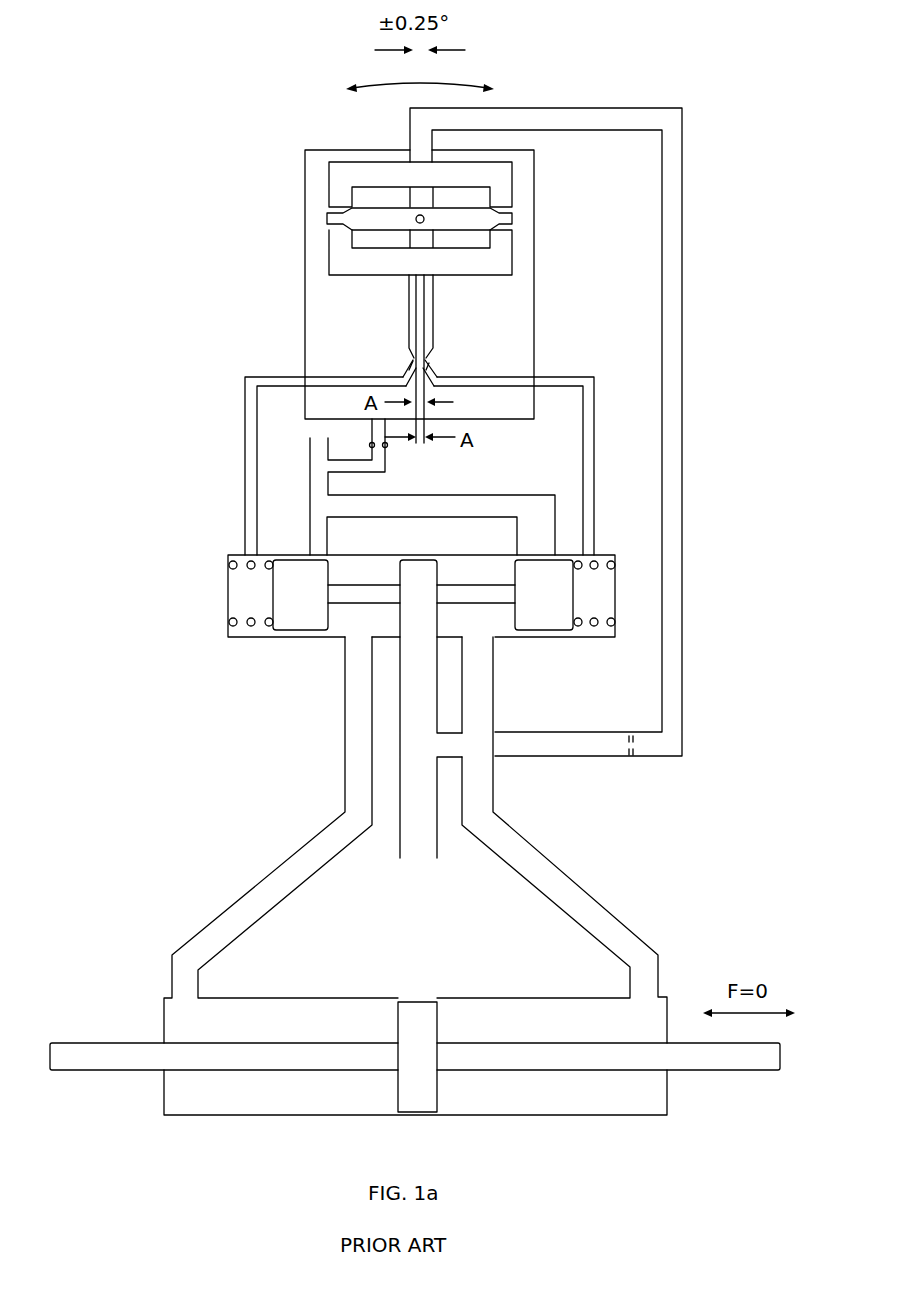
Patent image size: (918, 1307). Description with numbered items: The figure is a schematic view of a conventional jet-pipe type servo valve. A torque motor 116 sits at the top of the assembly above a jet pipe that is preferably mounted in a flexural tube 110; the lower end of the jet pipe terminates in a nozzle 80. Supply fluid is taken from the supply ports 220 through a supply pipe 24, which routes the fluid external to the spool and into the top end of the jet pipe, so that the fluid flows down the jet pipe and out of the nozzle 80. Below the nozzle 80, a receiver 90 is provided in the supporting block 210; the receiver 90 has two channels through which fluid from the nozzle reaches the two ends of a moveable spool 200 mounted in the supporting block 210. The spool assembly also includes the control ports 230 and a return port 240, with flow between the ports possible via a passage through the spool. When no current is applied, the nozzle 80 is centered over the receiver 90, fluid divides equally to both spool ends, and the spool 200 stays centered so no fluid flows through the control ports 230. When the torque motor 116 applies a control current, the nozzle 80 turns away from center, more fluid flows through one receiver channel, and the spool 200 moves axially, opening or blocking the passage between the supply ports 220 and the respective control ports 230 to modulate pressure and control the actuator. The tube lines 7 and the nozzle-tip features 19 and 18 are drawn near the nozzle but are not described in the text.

The supply pipe 24 is at (686, 146).
The flexural tube 110 is at (408, 286).
The torque motor 116 is at (328, 183).
The nozzle tube 7 is at (426, 300).
The nozzle tip left portion 19 is at (407, 368).
The nozzle tip right portion 18 is at (434, 370).
The nozzle 80 is at (412, 361).
The receiver 90 is at (428, 372).
The supply ports 220 is at (540, 525).
The supporting block 210 is at (228, 590).
The moveable spool 200 is at (485, 595).
The return port 240 is at (423, 788).
The control ports 230 is at (357, 715).